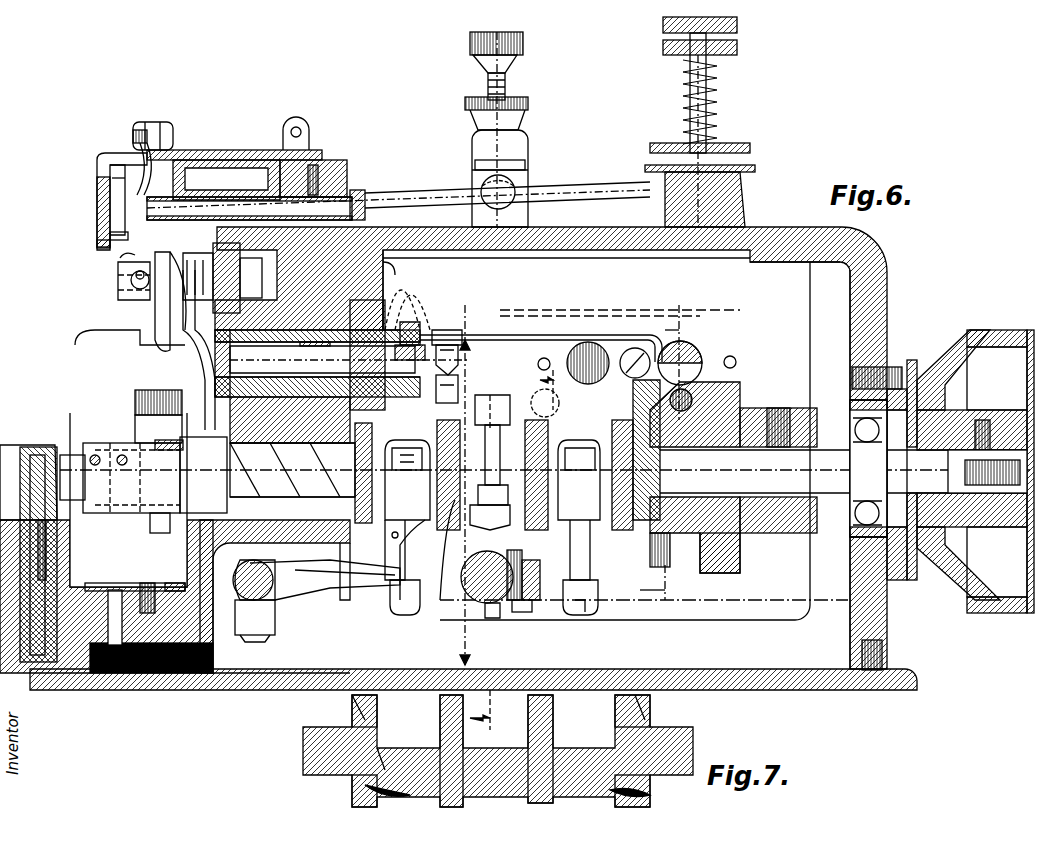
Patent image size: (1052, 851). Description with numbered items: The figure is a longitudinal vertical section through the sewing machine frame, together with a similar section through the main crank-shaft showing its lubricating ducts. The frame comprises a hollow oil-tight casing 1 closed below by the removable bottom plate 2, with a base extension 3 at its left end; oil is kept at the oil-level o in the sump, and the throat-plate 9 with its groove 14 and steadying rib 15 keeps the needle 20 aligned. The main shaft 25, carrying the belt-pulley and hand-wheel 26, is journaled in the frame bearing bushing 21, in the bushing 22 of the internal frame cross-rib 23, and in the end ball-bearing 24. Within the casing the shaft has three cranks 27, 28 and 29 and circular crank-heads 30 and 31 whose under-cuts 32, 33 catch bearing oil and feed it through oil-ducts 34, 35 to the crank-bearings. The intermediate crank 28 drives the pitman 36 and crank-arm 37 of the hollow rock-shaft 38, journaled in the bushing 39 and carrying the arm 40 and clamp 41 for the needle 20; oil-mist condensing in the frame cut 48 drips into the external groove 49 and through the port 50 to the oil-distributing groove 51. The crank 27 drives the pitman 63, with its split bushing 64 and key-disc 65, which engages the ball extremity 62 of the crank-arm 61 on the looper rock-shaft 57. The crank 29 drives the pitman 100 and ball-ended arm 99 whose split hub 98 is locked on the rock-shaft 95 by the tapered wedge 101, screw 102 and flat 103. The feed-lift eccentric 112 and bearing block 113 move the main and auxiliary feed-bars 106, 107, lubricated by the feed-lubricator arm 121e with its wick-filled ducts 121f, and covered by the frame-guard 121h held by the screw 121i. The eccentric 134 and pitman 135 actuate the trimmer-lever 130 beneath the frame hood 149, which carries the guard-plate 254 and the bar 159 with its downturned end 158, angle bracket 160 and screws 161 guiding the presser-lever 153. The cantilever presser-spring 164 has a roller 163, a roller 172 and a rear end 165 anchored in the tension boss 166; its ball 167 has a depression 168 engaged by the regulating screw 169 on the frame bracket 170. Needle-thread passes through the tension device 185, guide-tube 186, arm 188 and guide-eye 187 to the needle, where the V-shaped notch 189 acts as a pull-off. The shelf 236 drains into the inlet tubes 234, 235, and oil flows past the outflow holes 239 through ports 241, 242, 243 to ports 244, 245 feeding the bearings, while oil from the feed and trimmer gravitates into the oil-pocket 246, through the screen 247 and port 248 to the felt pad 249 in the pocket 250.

In FIG. 6, the hollow oil-tight casing 1 is at (355, 238).
In FIG. 6, the bottom plate 2 is at (755, 688).
In FIG. 6, the base extension 3 is at (60, 676).
In FIG. 6, the throat-plate 9 is at (525, 340).
In FIG. 6, the groove 14 is at (650, 452).
In FIG. 6, the steadying rib 15 is at (521, 400).
In FIG. 7, the steadying rib 15 is at (479, 710).
In FIG. 6, the needle 20 is at (125, 285).
In FIG. 6, the frame bearing bushing 21 is at (300, 515).
In FIG. 6, the bushing 22 is at (740, 515).
In FIG. 6, the internal frame cross-rib 23 is at (742, 395).
In FIG. 6, the end ball-bearing 24 is at (855, 515).
In FIG. 6, the main shaft 25 is at (797, 460).
In FIG. 7, the main shaft 25 is at (318, 730).
In FIG. 6, the belt-pulley and hand-wheel 26 is at (972, 600).
In FIG. 6, the crank 27 is at (405, 476).
In FIG. 7, the crank 27 is at (410, 765).
In FIG. 6, the intermediate crank 28 is at (470, 470).
In FIG. 7, the intermediate crank 28 is at (505, 750).
In FIG. 6, the crank 29 is at (565, 460).
In FIG. 7, the crank 29 is at (568, 760).
In FIG. 6, the circular crank-head 30 is at (362, 430).
In FIG. 7, the circular crank-head 30 is at (377, 708).
In FIG. 6, the circular crank-head 31 is at (620, 420).
In FIG. 7, the circular crank-head 31 is at (615, 708).
In FIG. 7, the under-cut 32 is at (352, 790).
In FIG. 7, the under-cut 33 is at (650, 790).
In FIG. 7, the oil-duct 34 is at (385, 785).
In FIG. 7, the oil-duct 35 is at (612, 787).
In FIG. 6, the pitman 36 is at (492, 455).
In FIG. 6, the crank-arm 37 is at (458, 360).
In FIG. 6, the hollow rock-shaft 38 is at (360, 270).
In FIG. 6, the frame bearing bushing 39 is at (317, 363).
In FIG. 6, the arm 40 is at (155, 305).
In FIG. 6, the clamp 41 is at (118, 272).
In FIG. 6, the internal frame cut 48 is at (385, 312).
In FIG. 6, the external groove 49 is at (385, 290).
In FIG. 6, the port 50 is at (310, 342).
In FIG. 6, the internal circumferential oil-distributing groove 51 is at (305, 376).
In FIG. 6, the rock-shaft 57 is at (275, 600).
In FIG. 6, the crank-arm 61 is at (330, 590).
In FIG. 6, the ball extremity 62 is at (385, 618).
In FIG. 6, the pitman 63 is at (390, 558).
In FIG. 6, the split bushing 64 is at (385, 540).
In FIG. 6, the internal key-disc 65 is at (420, 560).
In FIG. 6, the rock-shaft 95 is at (460, 570).
In FIG. 6, the split hub 98 is at (495, 618).
In FIG. 6, the ball-ended arm 99 is at (580, 615).
In FIG. 6, the pitman 100 is at (592, 564).
In FIG. 6, the tapered wedge 101 is at (529, 567).
In FIG. 6, the screw 102 is at (525, 612).
In FIG. 6, the flat 103 is at (487, 573).
In FIG. 6, the main feed-bar 106 is at (160, 392).
In FIG. 6, the auxiliary feed-bar 107 is at (165, 440).
In FIG. 6, the feed-lift eccentric 112 is at (150, 480).
In FIG. 6, the bearing block 113 is at (178, 513).
In FIG. 6, the feed-lubricator arm 121e is at (122, 455).
In FIG. 6, the wick-filled ducts 121f is at (95, 455).
In FIG. 6, the removable frame-guard 121h is at (40, 448).
In FIG. 6, the screw 121i is at (40, 455).
In FIG. 6, the trimmer-lever 130 is at (228, 242).
In FIG. 6, the main shaft eccentric 134 is at (194, 350).
In FIG. 6, the pitman 135 is at (190, 260).
In FIG. 6, the frame hood 149 is at (222, 152).
In FIG. 6, the presser-lever 153 is at (95, 244).
In FIG. 6, the downturned end 158 is at (97, 206).
In FIG. 6, the bar 159 is at (200, 152).
In FIG. 6, the angle bracket 160 is at (112, 180).
In FIG. 6, the screws 161 is at (178, 145).
In FIG. 6, the roller 163 is at (100, 228).
In FIG. 6, the cantilever presser-spring 164 is at (405, 193).
In FIG. 6, the downturned rear end 165 is at (735, 203).
In FIG. 6, the tension boss 166 is at (740, 180).
In FIG. 6, the ball 167 is at (515, 180).
In FIG. 6, the depression 168 is at (514, 205).
In FIG. 6, the presser-spring regulating screw 169 is at (500, 165).
In FIG. 6, the frame bracket 170 is at (505, 145).
In FIG. 6, the roller 172 is at (115, 195).
In FIG. 6, the tension device 185 is at (745, 145).
In FIG. 6, the guide-tube 186 is at (355, 190).
In FIG. 6, the guide-eye 187 is at (105, 162).
In FIG. 6, the arm 188 is at (135, 160).
In FIG. 6, the V-shaped notch 189 is at (120, 255).
In FIG. 6, the oil-catching inlet tube 234 is at (425, 345).
In FIG. 6, the oil-catching inlet tube 235 is at (695, 360).
In FIG. 6, the oil-spray-catching shelf 236 is at (575, 345).
In FIG. 6, the outflow holes 239 is at (544, 379).
In FIG. 6, the port 241 is at (502, 450).
In FIG. 6, the port 242 is at (584, 476).
In FIG. 6, the port 243 is at (414, 451).
In FIG. 6, the port 244 is at (690, 395).
In FIG. 6, the port 245 is at (292, 470).
In FIG. 6, the oil-pocket 246 is at (82, 585).
In FIG. 6, the screen 247 is at (178, 583).
In FIG. 6, the port 248 is at (108, 627).
In FIG. 6, the felt pad 249 is at (150, 675).
In FIG. 6, the pocket 250 is at (238, 630).
In FIG. 6, the trough-shaped guard-plate 254 is at (140, 330).
In FIG. 6, the oil-level o is at (760, 600).